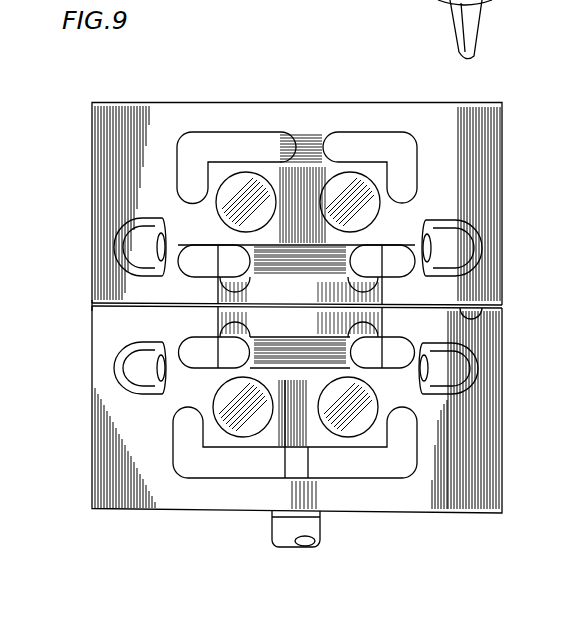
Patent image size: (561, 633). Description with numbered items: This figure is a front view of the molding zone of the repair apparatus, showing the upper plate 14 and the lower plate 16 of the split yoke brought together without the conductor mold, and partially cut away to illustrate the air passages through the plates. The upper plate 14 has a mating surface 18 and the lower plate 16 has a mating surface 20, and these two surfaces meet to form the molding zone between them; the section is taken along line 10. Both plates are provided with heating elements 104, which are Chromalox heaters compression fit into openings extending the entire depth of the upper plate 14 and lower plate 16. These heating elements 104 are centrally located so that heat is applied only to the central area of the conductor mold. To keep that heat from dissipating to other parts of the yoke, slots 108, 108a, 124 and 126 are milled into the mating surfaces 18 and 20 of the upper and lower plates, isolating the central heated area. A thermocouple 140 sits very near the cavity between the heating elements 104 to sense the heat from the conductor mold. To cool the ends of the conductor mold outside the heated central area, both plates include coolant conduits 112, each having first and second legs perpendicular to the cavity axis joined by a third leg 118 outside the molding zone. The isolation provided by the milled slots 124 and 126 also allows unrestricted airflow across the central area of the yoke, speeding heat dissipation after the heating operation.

The section line 10 is at (268, 38).
The upper plate 14 is at (500, 115).
The lower plate 16 is at (493, 500).
The mating surface 18 is at (485, 315).
The mating surface 20 is at (93, 316).
The heating element 104 is at (335, 190).
The slot 108 is at (200, 253).
The slot 108a is at (372, 354).
The coolant conduit 112 is at (470, 210).
The third leg 118 is at (118, 228).
The slot 124 is at (352, 145).
The slot 126 is at (367, 322).
The thermocouple 140 is at (308, 450).